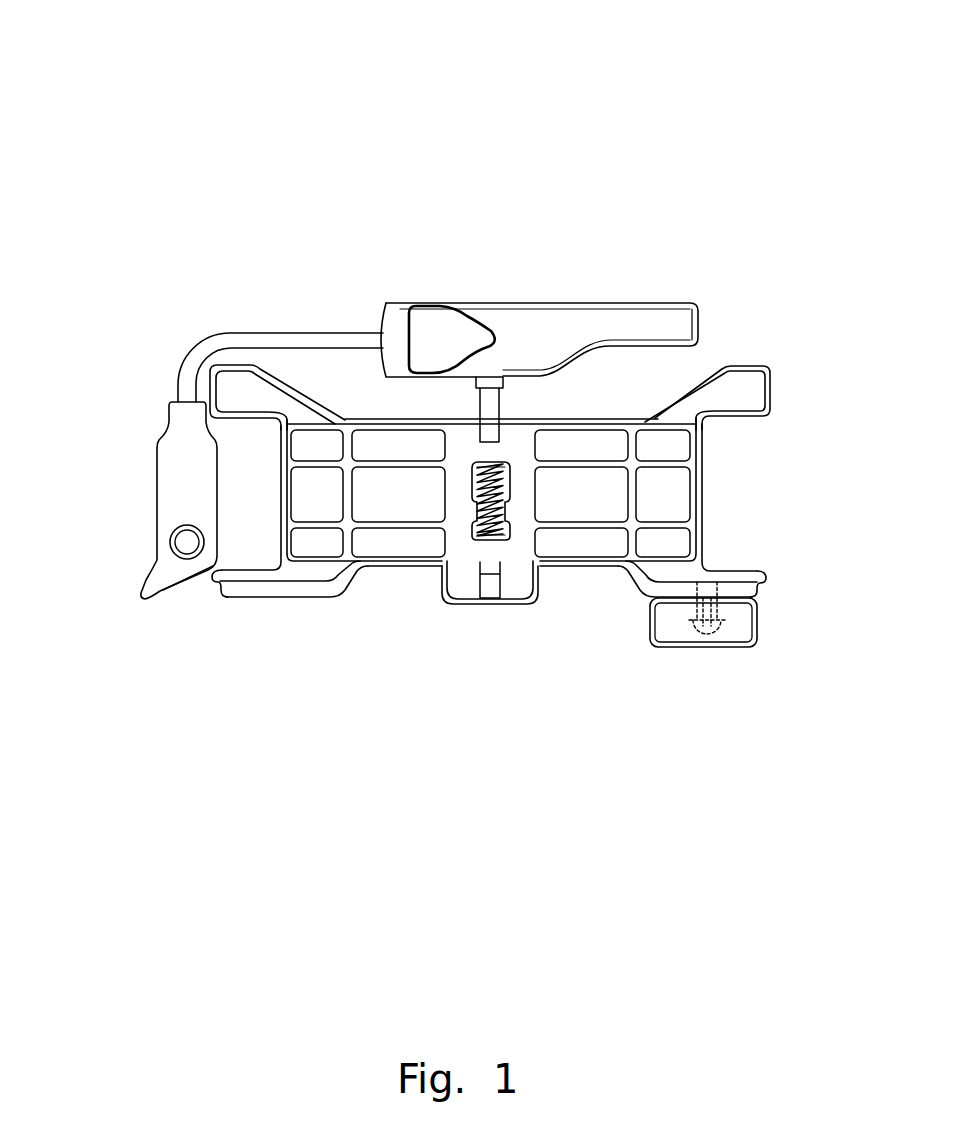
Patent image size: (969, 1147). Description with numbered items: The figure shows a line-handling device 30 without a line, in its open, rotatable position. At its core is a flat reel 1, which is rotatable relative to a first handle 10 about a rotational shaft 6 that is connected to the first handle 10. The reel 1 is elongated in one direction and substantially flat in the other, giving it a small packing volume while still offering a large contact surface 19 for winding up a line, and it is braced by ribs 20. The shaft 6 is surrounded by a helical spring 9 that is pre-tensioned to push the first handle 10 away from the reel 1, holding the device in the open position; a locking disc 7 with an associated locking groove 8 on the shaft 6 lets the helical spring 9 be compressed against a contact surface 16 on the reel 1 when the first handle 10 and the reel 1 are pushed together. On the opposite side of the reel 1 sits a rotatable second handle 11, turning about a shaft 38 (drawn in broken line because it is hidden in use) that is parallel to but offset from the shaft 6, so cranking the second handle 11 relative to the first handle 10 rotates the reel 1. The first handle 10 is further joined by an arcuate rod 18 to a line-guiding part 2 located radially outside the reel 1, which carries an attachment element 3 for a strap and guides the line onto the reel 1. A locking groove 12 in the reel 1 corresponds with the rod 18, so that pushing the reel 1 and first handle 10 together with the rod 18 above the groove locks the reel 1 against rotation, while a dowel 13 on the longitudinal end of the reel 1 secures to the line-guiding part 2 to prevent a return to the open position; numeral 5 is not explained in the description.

The flat reel 1 is at (298, 580).
The line-guiding part 2 is at (183, 446).
The attachment element 3 is at (183, 542).
The lever foot 5 is at (168, 572).
The rotational shaft 6 is at (490, 575).
The locking disc 7 is at (473, 462).
The locking groove 8 is at (502, 462).
The helical spring 9 is at (503, 520).
The first handle 10 is at (487, 302).
The rotatable second handle 11 is at (742, 613).
The locking groove 12 is at (267, 375).
The dowel 13 is at (213, 584).
The contact surface 16 is at (497, 541).
The arcuate rod 18 is at (245, 335).
The contact surface 19 is at (697, 497).
The ribs 20 is at (633, 493).
The line-handling device 30 is at (688, 155).
The shaft 38 is at (716, 634).